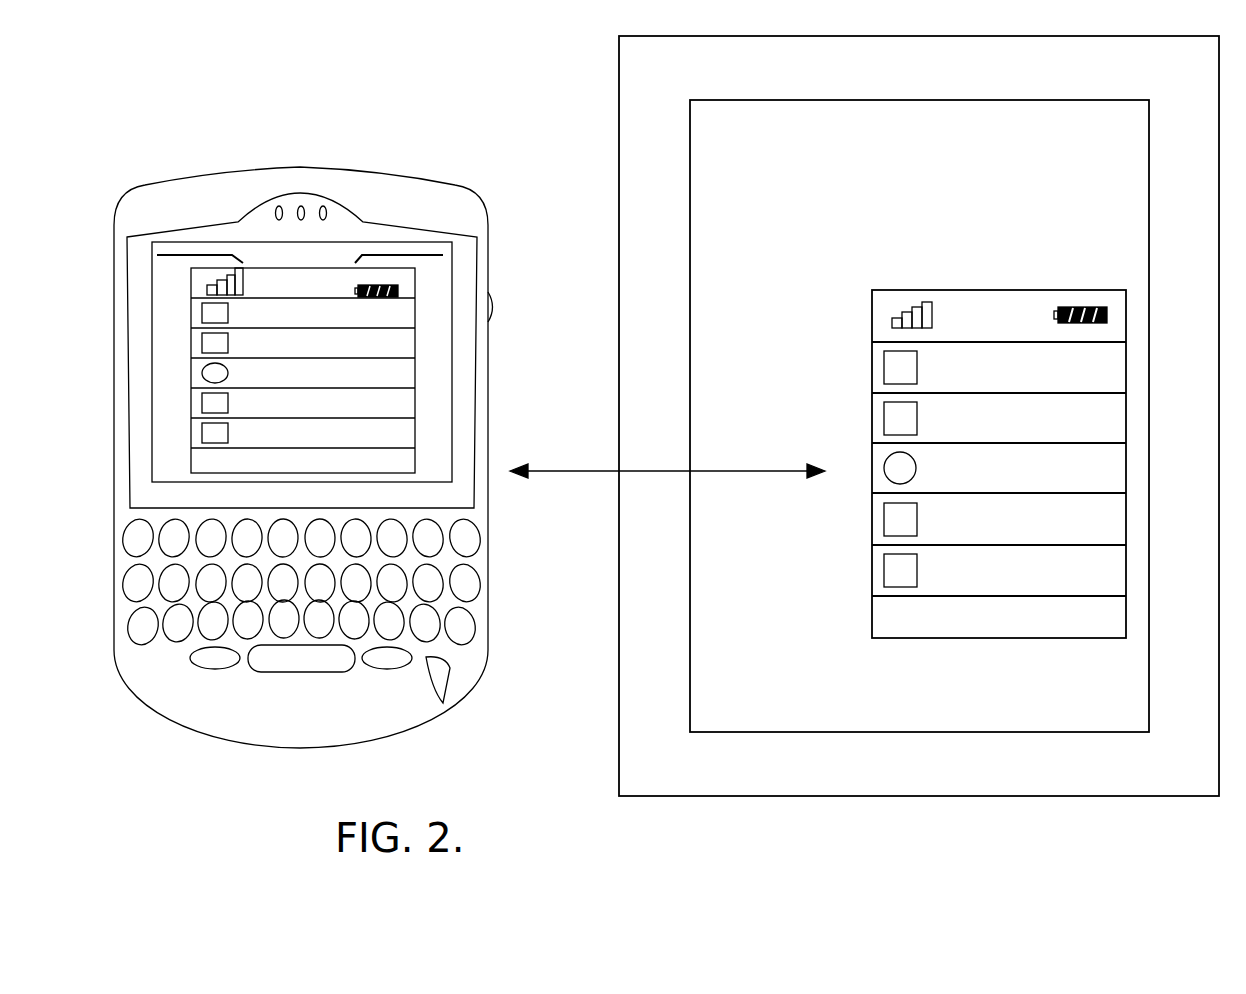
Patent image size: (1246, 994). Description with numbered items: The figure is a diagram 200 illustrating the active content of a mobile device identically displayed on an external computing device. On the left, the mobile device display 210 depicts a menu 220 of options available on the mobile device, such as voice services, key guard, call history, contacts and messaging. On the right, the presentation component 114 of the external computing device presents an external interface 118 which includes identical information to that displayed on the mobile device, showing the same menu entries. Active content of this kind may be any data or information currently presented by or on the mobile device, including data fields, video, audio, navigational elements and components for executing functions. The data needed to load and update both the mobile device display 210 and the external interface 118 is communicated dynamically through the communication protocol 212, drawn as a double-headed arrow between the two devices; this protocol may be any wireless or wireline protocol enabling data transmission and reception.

The diagram 200 is at (258, 112).
The mobile device display 210 is at (303, 168).
The menu 220 is at (425, 432).
The communication protocol 212 is at (568, 473).
The presentation component 114 is at (619, 653).
The external interface 118 is at (997, 290).